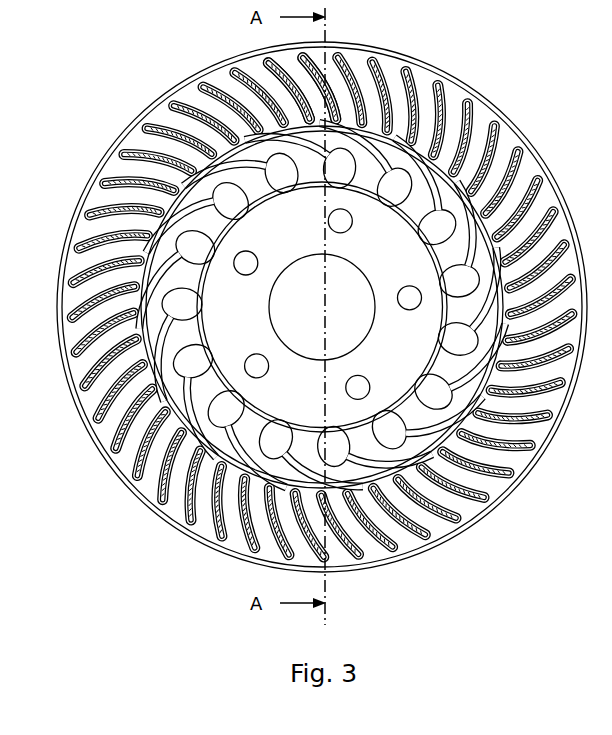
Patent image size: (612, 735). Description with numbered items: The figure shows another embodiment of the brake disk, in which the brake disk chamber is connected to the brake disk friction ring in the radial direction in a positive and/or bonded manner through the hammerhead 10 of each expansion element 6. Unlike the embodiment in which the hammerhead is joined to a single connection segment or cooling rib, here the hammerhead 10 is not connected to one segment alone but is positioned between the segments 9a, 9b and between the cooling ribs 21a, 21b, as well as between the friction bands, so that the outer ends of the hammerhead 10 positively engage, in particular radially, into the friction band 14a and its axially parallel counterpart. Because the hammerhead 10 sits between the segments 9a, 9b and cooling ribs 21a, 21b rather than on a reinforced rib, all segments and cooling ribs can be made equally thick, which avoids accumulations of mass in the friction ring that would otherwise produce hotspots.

The segment 9a is at (308, 62).
The cooling rib 21a is at (308, 62).
The segment 9b is at (328, 118).
The cooling rib 21b is at (328, 118).
The friction band 14a is at (338, 83).
The hammerhead 10 is at (328, 118).
The expansion element 6 is at (377, 172).